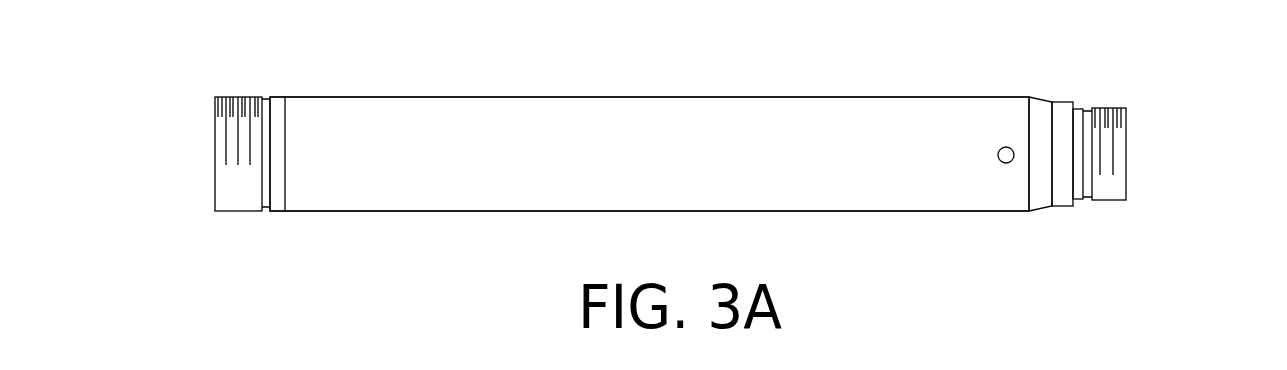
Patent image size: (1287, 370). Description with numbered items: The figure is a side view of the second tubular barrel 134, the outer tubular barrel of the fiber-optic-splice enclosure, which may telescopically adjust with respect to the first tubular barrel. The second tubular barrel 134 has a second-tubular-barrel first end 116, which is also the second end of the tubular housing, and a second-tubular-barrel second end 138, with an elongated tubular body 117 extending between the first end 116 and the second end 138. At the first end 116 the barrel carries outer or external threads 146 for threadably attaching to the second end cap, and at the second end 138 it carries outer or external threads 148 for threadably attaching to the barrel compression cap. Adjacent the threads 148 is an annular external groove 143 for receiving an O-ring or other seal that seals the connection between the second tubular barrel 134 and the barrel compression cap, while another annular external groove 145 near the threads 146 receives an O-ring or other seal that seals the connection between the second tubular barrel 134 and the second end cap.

The second tubular barrel 134 is at (722, 57).
The elongated tubular body 117 is at (588, 197).
The second-tubular-barrel second end 138 is at (215, 154).
The external threads 148 is at (234, 97).
The annular external groove 143 is at (265, 207).
The second-tubular-barrel first end 116 is at (1126, 153).
The external threads 146 is at (1106, 108).
The annular external groove 145 is at (1088, 197).